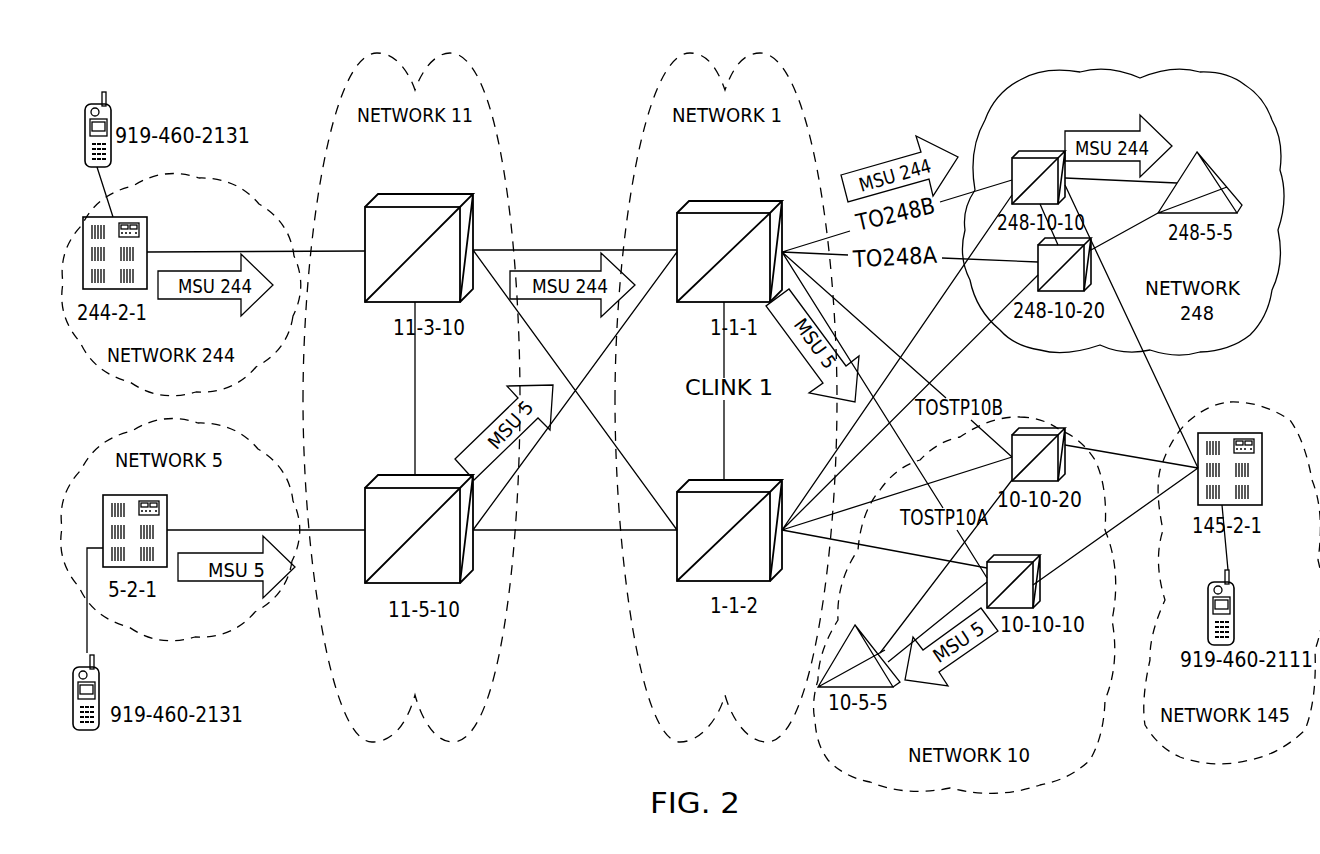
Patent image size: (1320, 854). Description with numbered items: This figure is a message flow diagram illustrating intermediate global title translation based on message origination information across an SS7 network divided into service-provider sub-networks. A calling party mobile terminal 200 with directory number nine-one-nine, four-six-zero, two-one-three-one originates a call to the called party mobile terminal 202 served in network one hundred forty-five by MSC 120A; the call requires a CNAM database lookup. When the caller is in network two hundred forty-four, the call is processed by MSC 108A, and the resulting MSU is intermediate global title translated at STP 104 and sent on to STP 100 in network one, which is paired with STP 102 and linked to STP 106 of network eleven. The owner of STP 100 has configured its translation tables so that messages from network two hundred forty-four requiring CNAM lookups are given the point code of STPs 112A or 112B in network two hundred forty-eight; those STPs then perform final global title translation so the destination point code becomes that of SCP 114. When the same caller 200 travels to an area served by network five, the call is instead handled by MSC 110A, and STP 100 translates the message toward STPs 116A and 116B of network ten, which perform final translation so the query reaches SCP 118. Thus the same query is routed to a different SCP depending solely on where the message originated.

The calling party mobile terminal 200 is at (98, 728).
The mobile switching center 108A is at (145, 237).
The mobile switching center 110A is at (167, 517).
The signal transfer point 104 is at (388, 193).
The signal transfer point 106 is at (387, 475).
The signal transfer point 100 is at (698, 201).
The signal transfer point 102 is at (698, 480).
The signal transfer point 112A is at (1038, 155).
The signal transfer point 112B is at (1092, 292).
The service control point 114 is at (1217, 175).
The signal transfer point 116A is at (1048, 432).
The signal transfer point 116B is at (1040, 585).
The service control point 118 is at (897, 686).
The mobile switching center 120A is at (1232, 432).
The called party mobile terminal 202 is at (1235, 613).